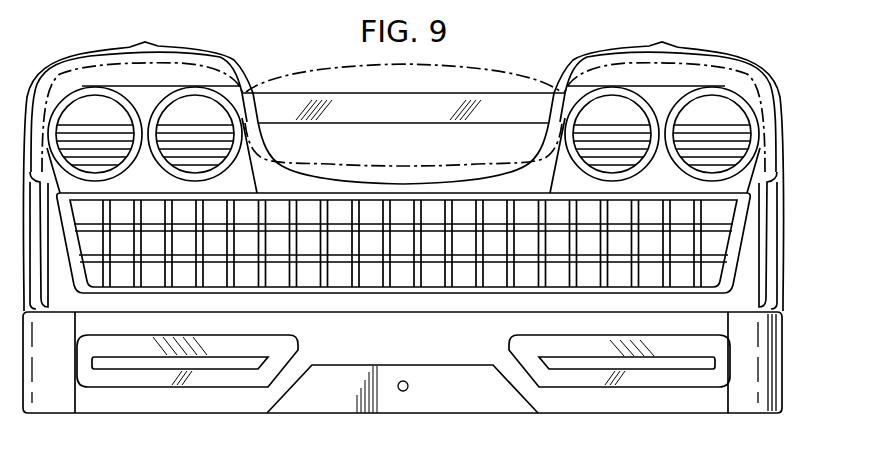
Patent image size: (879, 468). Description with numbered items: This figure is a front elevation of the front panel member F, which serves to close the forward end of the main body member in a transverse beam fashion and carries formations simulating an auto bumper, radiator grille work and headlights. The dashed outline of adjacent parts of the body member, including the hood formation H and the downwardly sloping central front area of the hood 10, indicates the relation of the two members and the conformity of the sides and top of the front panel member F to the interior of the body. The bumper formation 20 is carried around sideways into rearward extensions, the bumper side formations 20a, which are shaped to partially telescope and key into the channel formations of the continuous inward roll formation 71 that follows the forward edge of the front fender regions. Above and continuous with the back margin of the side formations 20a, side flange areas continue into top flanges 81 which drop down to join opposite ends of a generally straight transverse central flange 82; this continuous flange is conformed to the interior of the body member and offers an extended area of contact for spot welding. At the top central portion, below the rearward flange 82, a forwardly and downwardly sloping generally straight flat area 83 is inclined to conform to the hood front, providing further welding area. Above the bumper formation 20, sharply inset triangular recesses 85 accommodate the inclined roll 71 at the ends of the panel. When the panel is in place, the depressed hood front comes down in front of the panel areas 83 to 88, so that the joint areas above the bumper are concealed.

The hood 10 is at (205, 467).
The bumper formation 20 is at (725, 411).
The bumper side formation 20a is at (783, 393).
The inward roll formation 71 is at (498, 158).
The top flange 81 is at (678, 62).
The transverse central flange 82 is at (447, 93).
The sloping flat area 83 is at (412, 121).
The triangular recess 85 is at (762, 286).
The panel area 88 is at (416, 158).
The hood formation H is at (300, 56).
The front panel member F is at (515, 92).